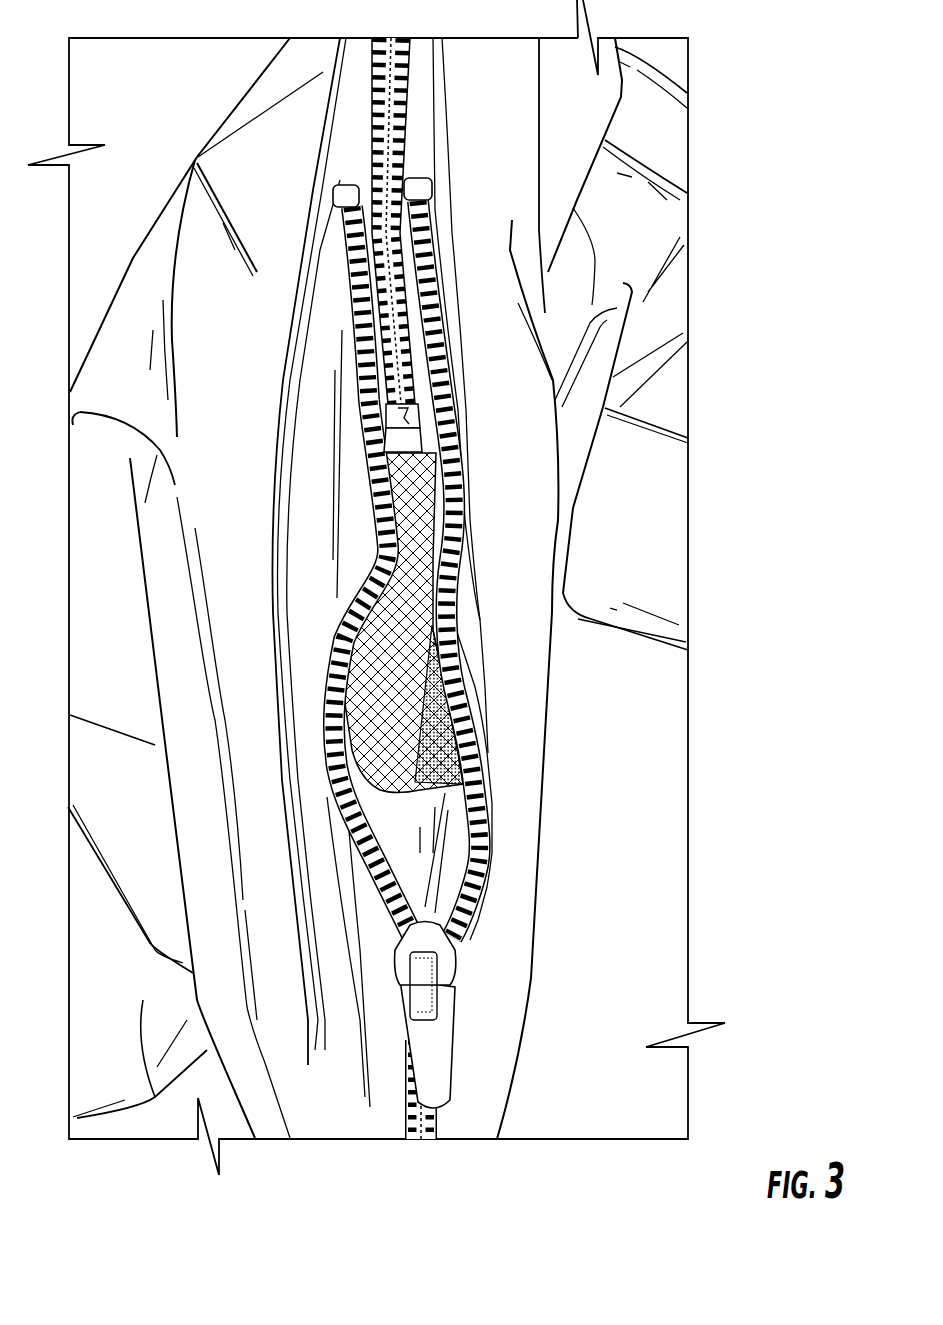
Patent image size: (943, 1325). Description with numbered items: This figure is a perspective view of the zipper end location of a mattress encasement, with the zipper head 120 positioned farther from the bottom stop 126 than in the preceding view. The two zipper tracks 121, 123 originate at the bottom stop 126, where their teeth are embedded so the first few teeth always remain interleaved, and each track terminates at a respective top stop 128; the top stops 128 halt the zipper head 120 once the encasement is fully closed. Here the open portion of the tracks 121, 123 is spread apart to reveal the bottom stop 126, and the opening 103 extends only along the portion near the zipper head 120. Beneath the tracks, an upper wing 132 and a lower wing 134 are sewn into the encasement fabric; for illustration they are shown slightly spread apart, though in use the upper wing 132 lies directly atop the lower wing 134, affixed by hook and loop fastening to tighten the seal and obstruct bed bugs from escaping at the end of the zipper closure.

The opening 103 is at (453, 850).
The zipper head 120 is at (430, 968).
The zipper track 121 is at (375, 532).
The zipper track 123 is at (449, 543).
The bottom stop 126 is at (412, 442).
The top stops 128 is at (415, 197).
The upper wing 132 is at (380, 737).
The lower wing 134 is at (436, 760).